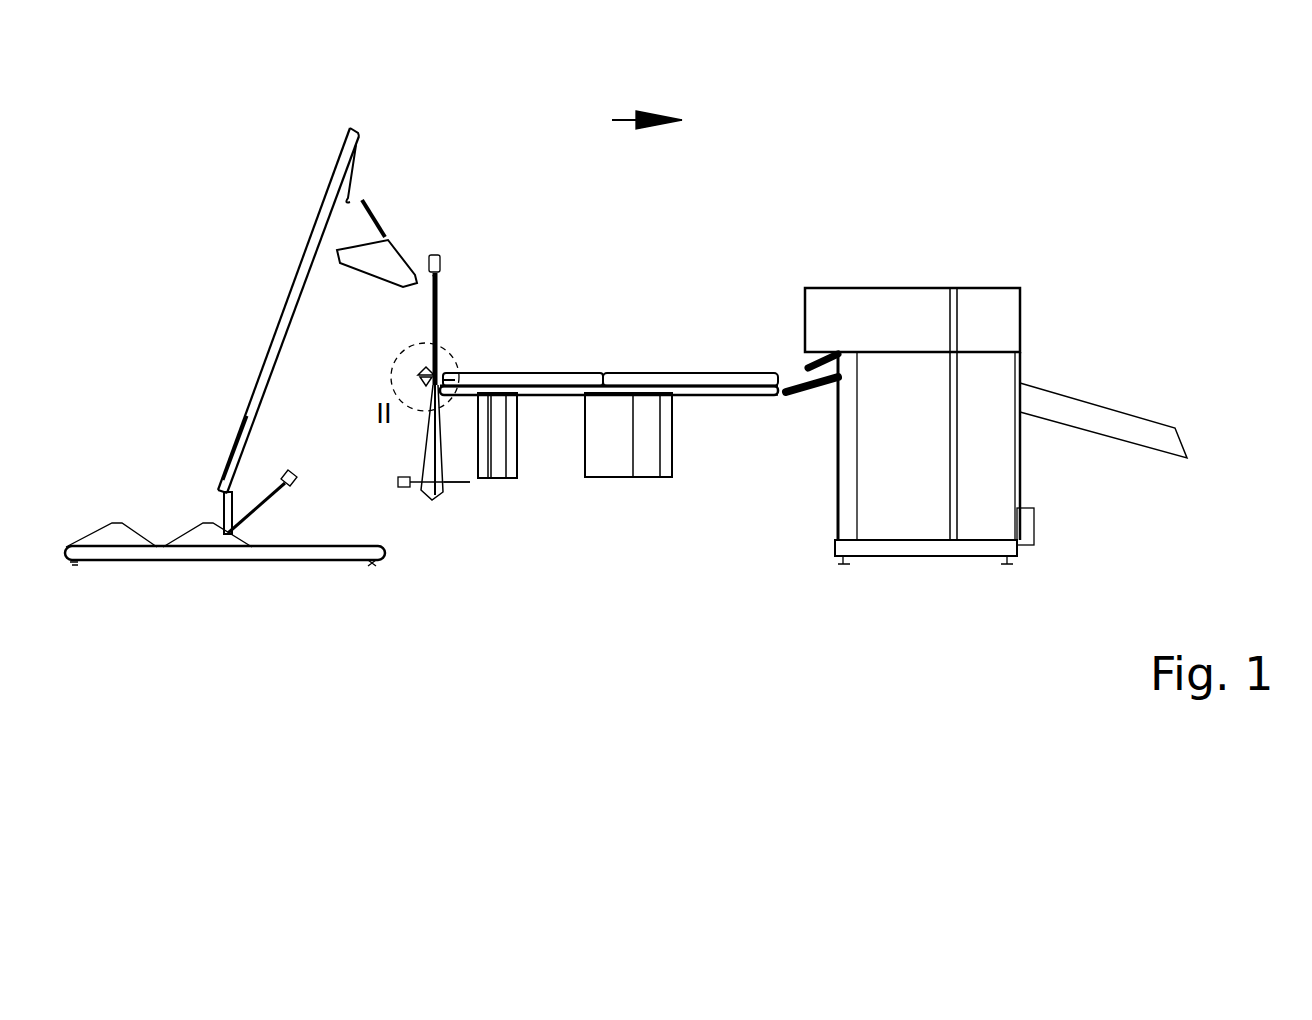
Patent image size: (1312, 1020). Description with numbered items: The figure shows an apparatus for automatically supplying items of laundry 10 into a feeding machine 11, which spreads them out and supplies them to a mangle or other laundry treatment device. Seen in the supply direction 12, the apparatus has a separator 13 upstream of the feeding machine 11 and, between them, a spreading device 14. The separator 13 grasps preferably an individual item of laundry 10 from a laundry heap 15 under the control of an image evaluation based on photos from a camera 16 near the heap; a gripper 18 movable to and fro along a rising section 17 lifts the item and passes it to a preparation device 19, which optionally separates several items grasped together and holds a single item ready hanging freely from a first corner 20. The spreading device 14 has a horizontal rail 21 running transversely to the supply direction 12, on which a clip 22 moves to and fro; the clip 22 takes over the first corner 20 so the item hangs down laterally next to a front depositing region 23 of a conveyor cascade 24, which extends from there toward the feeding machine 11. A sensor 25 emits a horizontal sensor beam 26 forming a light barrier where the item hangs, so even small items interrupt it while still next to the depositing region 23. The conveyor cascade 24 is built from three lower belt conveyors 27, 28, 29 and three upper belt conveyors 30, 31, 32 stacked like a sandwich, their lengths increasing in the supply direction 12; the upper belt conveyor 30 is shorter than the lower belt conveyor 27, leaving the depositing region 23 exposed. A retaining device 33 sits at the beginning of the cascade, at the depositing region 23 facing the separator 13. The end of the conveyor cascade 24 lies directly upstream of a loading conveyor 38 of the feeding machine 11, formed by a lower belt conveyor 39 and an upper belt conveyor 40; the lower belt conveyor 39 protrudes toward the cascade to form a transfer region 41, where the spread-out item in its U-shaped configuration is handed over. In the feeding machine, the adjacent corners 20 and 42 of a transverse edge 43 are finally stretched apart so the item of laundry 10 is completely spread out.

The item of laundry 10 is at (455, 385).
The feeding machine 11 is at (928, 307).
The supply direction 12 is at (622, 118).
The separator 13 is at (234, 200).
The spreading device 14 is at (642, 300).
The laundry heap 15 is at (196, 535).
The camera 16 is at (292, 470).
The rising section 17 is at (266, 365).
The gripper 18 is at (216, 546).
The preparation device 19 is at (390, 258).
The first corner 20 is at (445, 290).
The rail 21 is at (436, 256).
The clip 22 is at (438, 282).
The depositing region 23 is at (418, 362).
The conveyor cascade 24 is at (590, 332).
The sensor 25 is at (403, 490).
The sensor beam 26 is at (456, 490).
The lower belt conveyor 27 is at (452, 390).
The lower belt conveyor 28 is at (548, 396).
The lower belt conveyor 29 is at (720, 396).
The upper belt conveyor 30 is at (456, 392).
The upper belt conveyor 31 is at (540, 374).
The upper belt conveyor 32 is at (690, 374).
The retaining device 33 is at (413, 378).
The loading conveyor 38 is at (788, 340).
The lower belt conveyor 39 is at (812, 396).
The upper belt conveyor 40 is at (824, 368).
The transfer region 41 is at (798, 394).
The corner 42 is at (592, 475).
The transverse edge 43 is at (585, 440).